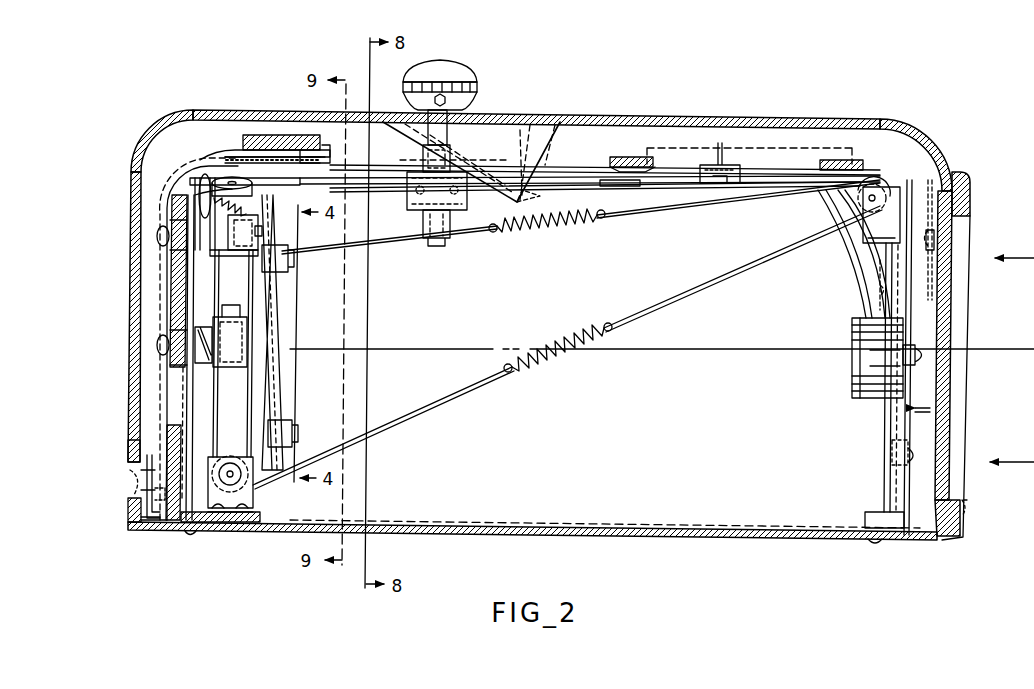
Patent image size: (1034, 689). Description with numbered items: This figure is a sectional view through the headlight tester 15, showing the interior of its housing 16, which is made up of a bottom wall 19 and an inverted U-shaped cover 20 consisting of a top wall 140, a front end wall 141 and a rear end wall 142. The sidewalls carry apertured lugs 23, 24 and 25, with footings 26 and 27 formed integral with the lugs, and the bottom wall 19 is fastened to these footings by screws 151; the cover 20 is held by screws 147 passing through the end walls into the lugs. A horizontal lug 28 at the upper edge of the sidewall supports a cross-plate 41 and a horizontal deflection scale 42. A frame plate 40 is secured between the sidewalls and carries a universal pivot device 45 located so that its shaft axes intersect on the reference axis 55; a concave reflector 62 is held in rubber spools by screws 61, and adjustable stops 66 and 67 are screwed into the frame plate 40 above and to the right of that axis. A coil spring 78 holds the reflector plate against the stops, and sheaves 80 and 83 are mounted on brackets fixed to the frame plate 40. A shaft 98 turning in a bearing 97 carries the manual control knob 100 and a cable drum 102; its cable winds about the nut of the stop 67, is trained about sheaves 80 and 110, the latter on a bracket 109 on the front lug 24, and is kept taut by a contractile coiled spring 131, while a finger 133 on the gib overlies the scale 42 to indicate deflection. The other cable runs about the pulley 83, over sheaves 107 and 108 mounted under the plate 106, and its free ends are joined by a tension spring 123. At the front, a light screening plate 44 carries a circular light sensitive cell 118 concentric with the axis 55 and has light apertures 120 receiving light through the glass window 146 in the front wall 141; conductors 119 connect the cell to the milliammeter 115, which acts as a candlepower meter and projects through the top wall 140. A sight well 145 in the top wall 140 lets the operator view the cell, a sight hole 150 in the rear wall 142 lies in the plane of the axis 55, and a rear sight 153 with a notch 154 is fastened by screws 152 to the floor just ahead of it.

The headlight tester 15 is at (125, 108).
The housing 16 is at (124, 233).
The bottom wall 19 is at (778, 541).
The top and end wall cover 20 is at (897, 118).
The apertured lug 23 is at (181, 455).
The apertured lug 24 is at (868, 270).
The apertured lug 25 is at (896, 470).
The apertured footing 26 is at (258, 514).
The apertured footing 27 is at (876, 522).
The horizontal lug 28 is at (236, 150).
The frame plate 40 is at (180, 276).
The cross-plate 41 is at (212, 180).
The horizontal deflection scale 42 is at (238, 134).
The light screening plate 44 is at (936, 180).
The universal pivot device 45 is at (243, 383).
The reference axis 55 is at (402, 348).
The screw 61 is at (294, 262).
The concave reflector 62 is at (285, 387).
The adjustable stop 66 is at (247, 216).
The adjustable stop 67 is at (243, 322).
The coil spring 78 is at (259, 232).
The sheave 80 is at (215, 182).
The sheave 83 is at (256, 190).
The bearing 97 is at (446, 222).
The shaft 98 is at (440, 135).
The manual control knob 100 is at (445, 78).
The cable drum 102 is at (452, 150).
The plate 106 is at (705, 175).
The sheave 107 is at (602, 182).
The sheave 108 is at (880, 180).
The bracket 109 is at (881, 215).
The sheave 110 is at (848, 205).
The milliammeter 115 is at (745, 127).
The light sensitive cell 118 is at (870, 348).
The conductor 119 is at (866, 285).
The light aperture 120 is at (920, 300).
The tension spring 123 is at (540, 230).
The contractile coiled spring 131 is at (540, 362).
The finger 133 is at (290, 136).
The top wall 140 is at (570, 122).
The front end wall 141 is at (962, 178).
The rear end wall 142 is at (133, 293).
The sight well 145 is at (528, 200).
The glass window 146 is at (952, 323).
The screw 147 is at (134, 478).
The sight hole 150 is at (138, 462).
The screw 151 is at (192, 533).
The screw 152 is at (166, 525).
The rear sight 153 is at (133, 507).
The notch 154 is at (150, 492).